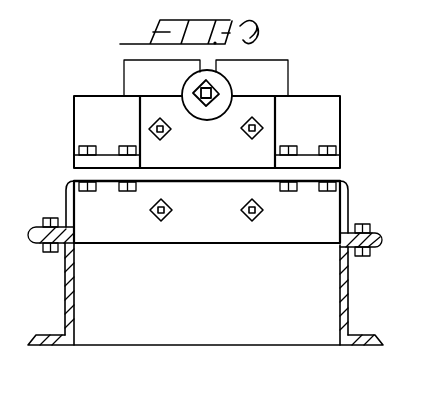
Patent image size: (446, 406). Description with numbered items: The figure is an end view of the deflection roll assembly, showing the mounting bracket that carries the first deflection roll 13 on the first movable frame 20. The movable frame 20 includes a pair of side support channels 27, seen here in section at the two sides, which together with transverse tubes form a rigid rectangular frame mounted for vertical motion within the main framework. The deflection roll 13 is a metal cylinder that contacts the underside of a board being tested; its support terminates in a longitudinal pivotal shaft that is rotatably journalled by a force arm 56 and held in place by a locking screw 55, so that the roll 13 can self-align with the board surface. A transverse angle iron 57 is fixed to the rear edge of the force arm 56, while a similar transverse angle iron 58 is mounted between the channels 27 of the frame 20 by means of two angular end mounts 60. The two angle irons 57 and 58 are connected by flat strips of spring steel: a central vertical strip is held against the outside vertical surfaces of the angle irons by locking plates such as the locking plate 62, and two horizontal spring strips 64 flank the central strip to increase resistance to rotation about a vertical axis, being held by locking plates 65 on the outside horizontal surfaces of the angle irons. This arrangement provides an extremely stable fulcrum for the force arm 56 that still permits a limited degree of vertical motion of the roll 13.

The first deflection roll 13 is at (288, 78).
The force arm 56 is at (190, 86).
The locking screw 55 is at (207, 99).
The locking plate 62 is at (199, 165).
The transverse angle iron 57 is at (74, 113).
The locking plate 65 is at (80, 152).
The horizontal spring strips 64 is at (74, 172).
The transverse angle iron 58 is at (305, 232).
The angular end mounts 60 is at (66, 202).
The first movable frame 20 is at (348, 280).
The side support channels 27 is at (66, 296).